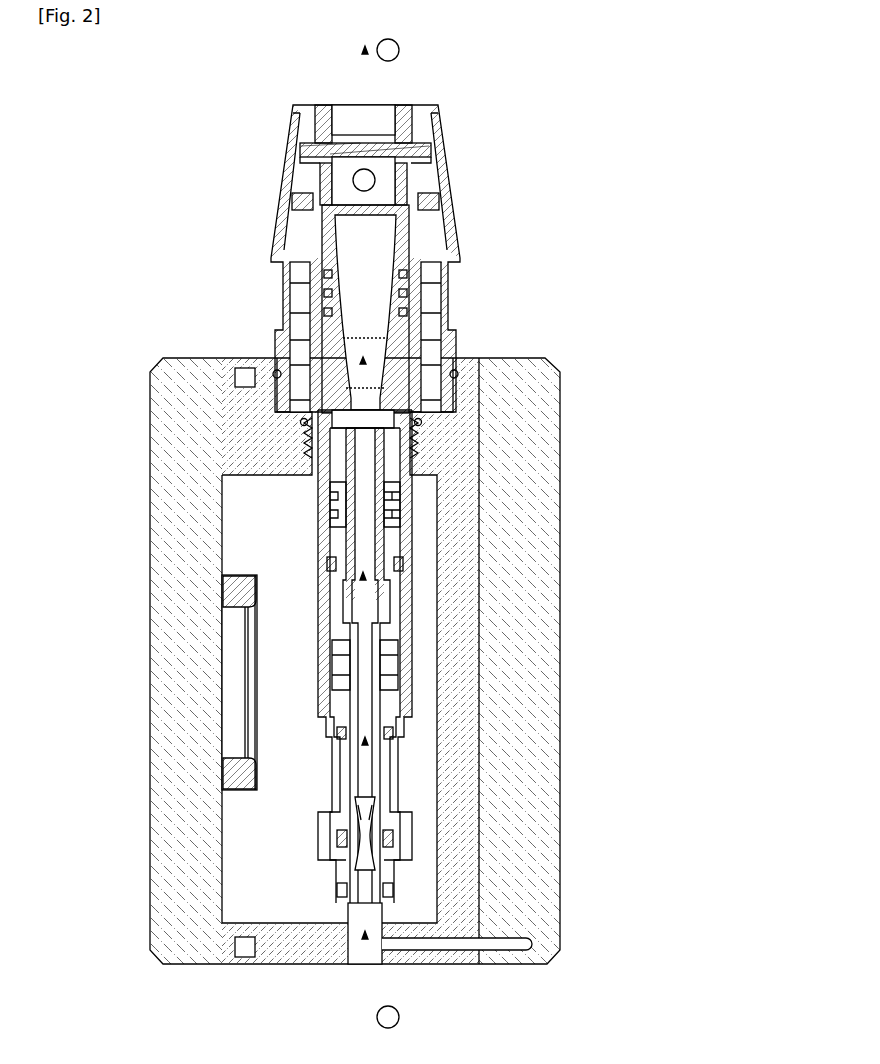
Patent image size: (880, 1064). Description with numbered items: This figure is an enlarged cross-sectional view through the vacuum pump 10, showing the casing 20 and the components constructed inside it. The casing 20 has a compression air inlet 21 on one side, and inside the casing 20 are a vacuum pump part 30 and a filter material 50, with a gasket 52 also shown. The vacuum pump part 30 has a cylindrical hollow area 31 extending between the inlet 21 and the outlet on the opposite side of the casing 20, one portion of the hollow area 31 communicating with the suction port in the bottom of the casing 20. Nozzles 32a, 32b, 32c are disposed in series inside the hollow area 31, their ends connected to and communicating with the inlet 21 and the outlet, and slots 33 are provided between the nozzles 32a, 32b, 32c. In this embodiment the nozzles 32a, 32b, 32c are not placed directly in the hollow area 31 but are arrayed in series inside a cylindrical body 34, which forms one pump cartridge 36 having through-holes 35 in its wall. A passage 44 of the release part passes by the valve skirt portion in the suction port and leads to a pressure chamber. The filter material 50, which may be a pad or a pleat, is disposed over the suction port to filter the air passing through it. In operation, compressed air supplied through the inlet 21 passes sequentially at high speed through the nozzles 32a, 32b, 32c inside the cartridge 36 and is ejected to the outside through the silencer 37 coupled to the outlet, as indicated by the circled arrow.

The vacuum pump 10 is at (423, 540).
The casing 20 is at (586, 510).
The compression air inlet 21 is at (352, 967).
The vacuum pump part 30 is at (498, 666).
The hollow area 31 is at (420, 806).
The nozzle 32a is at (332, 828).
The nozzle 32b is at (340, 762).
The nozzle 32c is at (340, 583).
The slots 33 is at (338, 432).
The cylindrical body 34 is at (405, 686).
The through-holes 35 is at (330, 500).
The pump cartridge 36 is at (424, 749).
The silencer 37 is at (278, 196).
The passage 44 is at (500, 950).
The filter material 50 is at (242, 700).
The gasket 52 is at (240, 598).